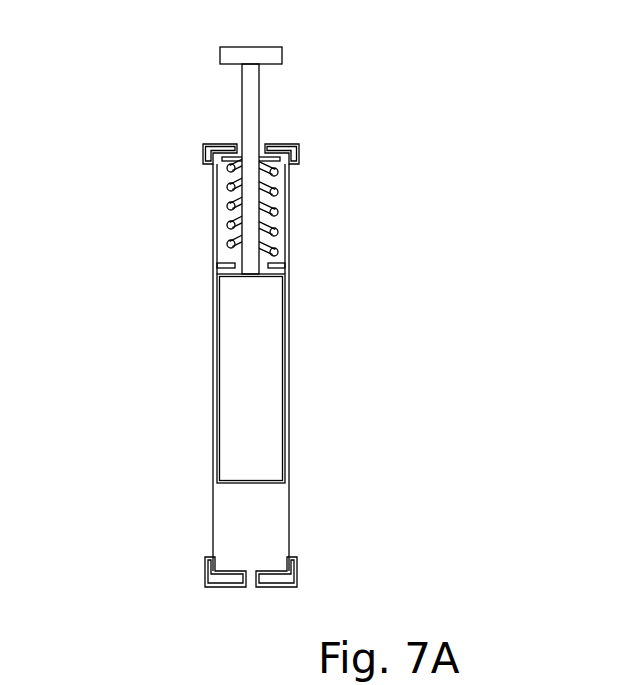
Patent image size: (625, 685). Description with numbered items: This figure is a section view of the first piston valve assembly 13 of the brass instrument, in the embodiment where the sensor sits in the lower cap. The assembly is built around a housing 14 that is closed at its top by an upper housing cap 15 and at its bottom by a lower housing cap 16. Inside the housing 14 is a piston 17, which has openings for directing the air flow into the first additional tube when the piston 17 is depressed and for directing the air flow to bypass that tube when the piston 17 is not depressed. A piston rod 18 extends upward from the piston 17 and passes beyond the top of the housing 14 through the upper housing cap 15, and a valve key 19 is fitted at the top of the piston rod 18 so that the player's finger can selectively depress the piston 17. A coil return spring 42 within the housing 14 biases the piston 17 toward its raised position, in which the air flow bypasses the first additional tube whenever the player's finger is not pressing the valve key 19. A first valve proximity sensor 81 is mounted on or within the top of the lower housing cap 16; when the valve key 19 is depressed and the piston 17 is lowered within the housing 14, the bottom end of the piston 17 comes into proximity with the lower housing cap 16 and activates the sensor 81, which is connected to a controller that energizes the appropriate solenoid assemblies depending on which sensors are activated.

The first piston valve assembly 13 is at (93, 277).
The housing 14 is at (213, 497).
The upper housing cap 15 is at (202, 160).
The lower housing cap 16 is at (290, 579).
The piston 17 is at (274, 377).
The piston rod 18 is at (248, 110).
The valve key 19 is at (220, 57).
The coil return spring 42 is at (228, 206).
The first valve proximity sensor 81 is at (227, 570).